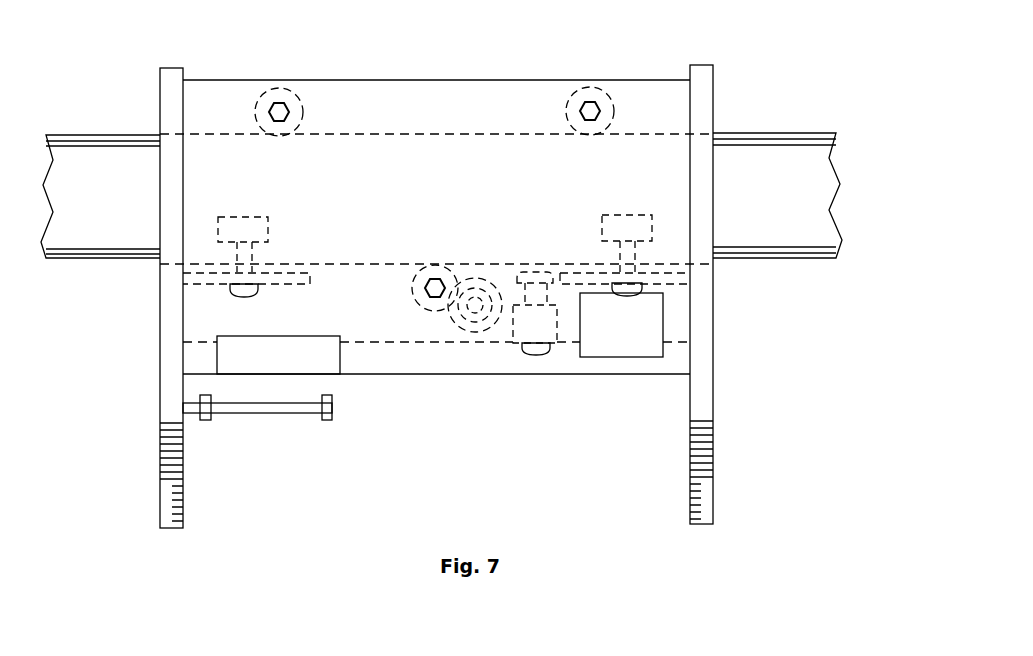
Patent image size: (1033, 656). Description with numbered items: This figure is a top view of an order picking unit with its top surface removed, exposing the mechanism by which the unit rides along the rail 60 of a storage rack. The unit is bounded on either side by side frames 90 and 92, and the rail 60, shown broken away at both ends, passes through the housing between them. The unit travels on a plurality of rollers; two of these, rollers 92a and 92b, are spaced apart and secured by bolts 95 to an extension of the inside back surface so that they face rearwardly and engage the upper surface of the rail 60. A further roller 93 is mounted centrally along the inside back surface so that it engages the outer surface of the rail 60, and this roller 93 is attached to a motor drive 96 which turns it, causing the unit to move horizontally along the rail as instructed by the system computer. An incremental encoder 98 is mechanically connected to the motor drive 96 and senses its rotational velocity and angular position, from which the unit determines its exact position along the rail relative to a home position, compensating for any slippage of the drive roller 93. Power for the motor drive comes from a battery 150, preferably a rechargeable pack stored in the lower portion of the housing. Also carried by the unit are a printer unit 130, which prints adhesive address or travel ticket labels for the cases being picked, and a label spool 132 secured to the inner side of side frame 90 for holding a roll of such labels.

The rail 60 is at (105, 238).
The side frame 90 is at (160, 397).
The side frame 92 is at (714, 375).
The roller 92a is at (255, 215).
The roller 92b is at (625, 212).
The roller 93 is at (410, 284).
The bolt 95 is at (280, 105).
The motor drive 96 is at (476, 333).
The incremental encoder 98 is at (553, 340).
The printer unit 130 is at (330, 355).
The label spool 132 is at (268, 415).
The battery 150 is at (613, 340).